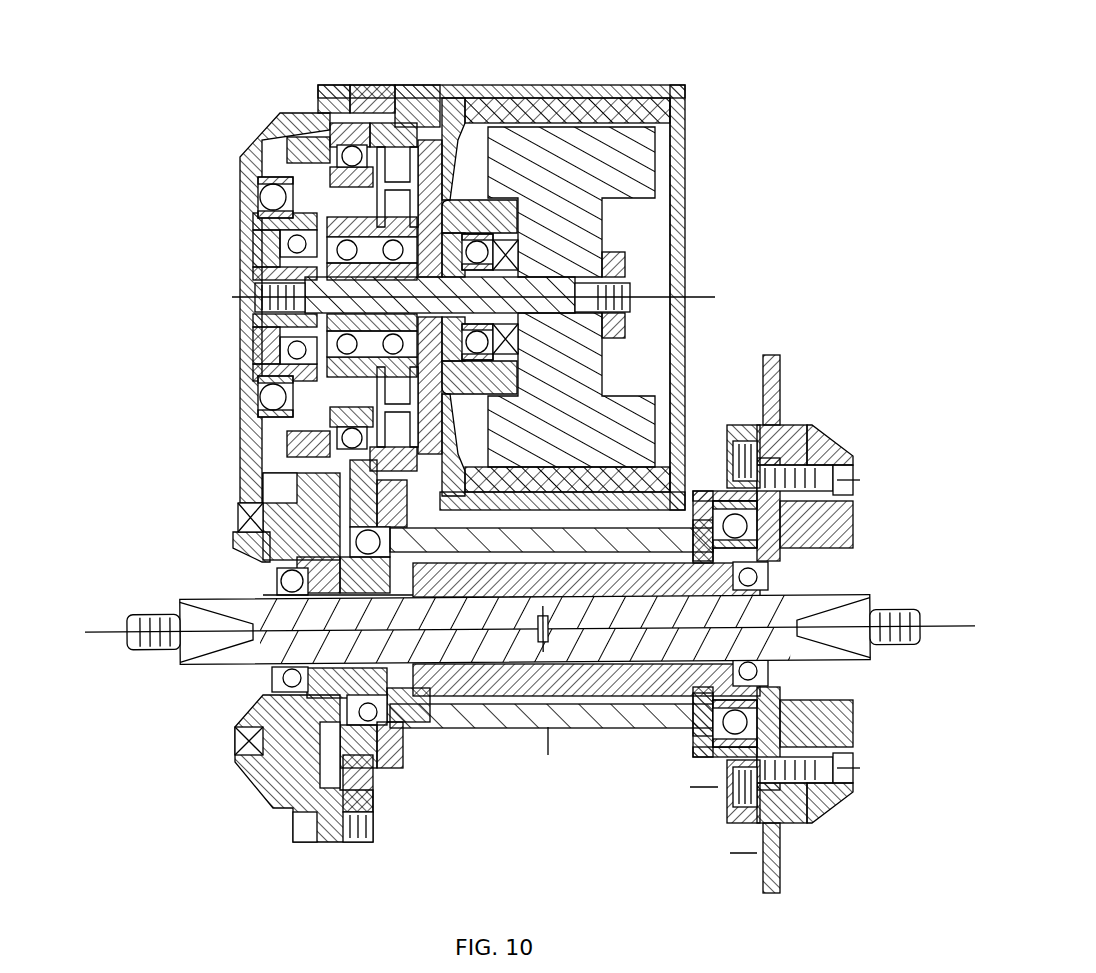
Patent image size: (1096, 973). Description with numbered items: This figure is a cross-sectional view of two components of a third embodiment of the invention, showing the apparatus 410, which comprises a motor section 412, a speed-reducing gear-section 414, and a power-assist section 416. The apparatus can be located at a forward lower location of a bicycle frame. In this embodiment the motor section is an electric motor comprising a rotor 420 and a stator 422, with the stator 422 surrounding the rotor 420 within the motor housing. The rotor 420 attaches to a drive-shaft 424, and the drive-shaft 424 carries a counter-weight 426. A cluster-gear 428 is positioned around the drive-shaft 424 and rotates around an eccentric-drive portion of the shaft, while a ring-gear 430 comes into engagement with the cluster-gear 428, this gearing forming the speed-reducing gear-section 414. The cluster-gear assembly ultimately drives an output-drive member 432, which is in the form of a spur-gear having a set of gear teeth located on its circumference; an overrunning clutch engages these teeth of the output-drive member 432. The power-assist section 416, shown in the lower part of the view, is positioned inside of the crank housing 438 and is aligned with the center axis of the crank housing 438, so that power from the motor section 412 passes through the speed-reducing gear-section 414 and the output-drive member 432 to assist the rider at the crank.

The apparatus 410 is at (725, 168).
The motor section 412 is at (655, 214).
The speed-reducing gear-section 414 is at (343, 62).
The power-assist section 416 is at (505, 704).
The rotor 420 is at (645, 402).
The stator 422 is at (668, 112).
The drive-shaft 424 is at (633, 313).
The counter-weight 426 is at (455, 103).
The cluster-gear 428 is at (395, 122).
The ring-gear 430 is at (383, 88).
The output-drive member 432 is at (325, 322).
The crank housing 438 is at (590, 720).